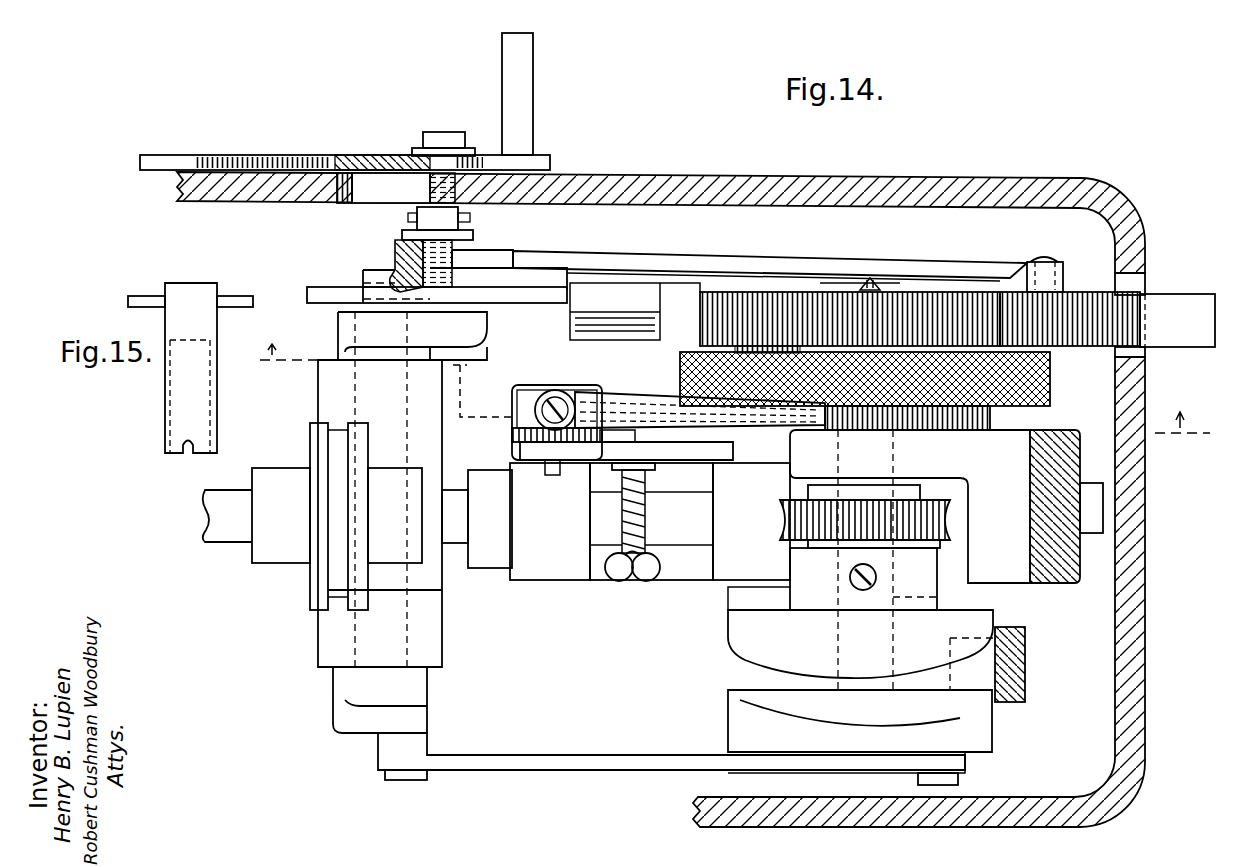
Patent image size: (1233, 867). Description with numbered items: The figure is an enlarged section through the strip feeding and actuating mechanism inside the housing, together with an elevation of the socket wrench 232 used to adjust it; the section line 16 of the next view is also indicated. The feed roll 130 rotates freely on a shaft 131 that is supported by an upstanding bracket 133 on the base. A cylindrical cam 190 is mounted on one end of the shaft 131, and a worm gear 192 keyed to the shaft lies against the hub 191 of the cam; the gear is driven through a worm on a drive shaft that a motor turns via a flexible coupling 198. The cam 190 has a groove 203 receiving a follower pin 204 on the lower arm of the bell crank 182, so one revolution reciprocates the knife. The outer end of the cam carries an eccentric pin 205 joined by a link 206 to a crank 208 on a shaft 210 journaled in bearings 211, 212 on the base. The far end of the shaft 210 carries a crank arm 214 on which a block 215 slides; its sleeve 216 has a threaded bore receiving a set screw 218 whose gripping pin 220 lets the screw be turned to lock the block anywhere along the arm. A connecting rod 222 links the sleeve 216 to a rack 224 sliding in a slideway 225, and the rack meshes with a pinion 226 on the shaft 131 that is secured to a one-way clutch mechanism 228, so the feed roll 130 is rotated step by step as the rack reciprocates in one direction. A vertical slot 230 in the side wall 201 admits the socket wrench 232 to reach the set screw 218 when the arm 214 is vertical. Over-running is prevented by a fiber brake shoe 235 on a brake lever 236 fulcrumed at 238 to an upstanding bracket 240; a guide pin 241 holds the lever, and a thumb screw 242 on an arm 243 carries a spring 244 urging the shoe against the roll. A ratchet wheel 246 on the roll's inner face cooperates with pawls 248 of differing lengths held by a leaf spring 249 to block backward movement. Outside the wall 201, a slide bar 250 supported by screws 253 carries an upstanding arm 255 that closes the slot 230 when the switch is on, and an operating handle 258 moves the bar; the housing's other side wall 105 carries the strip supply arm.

In FIG. 14, the section line 16 is at (732, 406).
In FIG. 14, the side wall 105 is at (695, 806).
In FIG. 14, the feed roll 130 is at (1040, 370).
In FIG. 14, the shaft 131 is at (941, 596).
In FIG. 14, the upstanding bracket 133 is at (910, 560).
In FIG. 14, the bell crank 182 is at (1025, 655).
In FIG. 14, the cylindrical cam 190 is at (992, 722).
In FIG. 14, the hub 191 is at (915, 562).
In FIG. 14, the worm gear 192 is at (935, 500).
In FIG. 14, the flexible coupling 198 is at (312, 565).
In FIG. 14, the side wall 201 is at (562, 176).
In FIG. 14, the groove 203 is at (730, 688).
In FIG. 14, the follower pin 204 is at (995, 670).
In FIG. 14, the eccentric pin 205 is at (960, 779).
In FIG. 14, the link 206 is at (598, 755).
In FIG. 14, the crank 208 is at (420, 718).
In FIG. 14, the shaft 210 is at (408, 635).
In FIG. 14, the bearing 211 is at (325, 635).
In FIG. 14, the bearing 212 is at (333, 408).
In FIG. 14, the crank arm 214 is at (538, 300).
In FIG. 14, the block 215 is at (365, 272).
In FIG. 14, the sleeve 216 is at (398, 245).
In FIG. 14, the set screw 218 is at (455, 256).
In FIG. 14, the gripping pin 220 is at (470, 216).
In FIG. 14, the connecting rod 222 is at (628, 252).
In FIG. 14, the rack 224 is at (1177, 320).
In FIG. 14, the slideway 225 is at (625, 338).
In FIG. 14, the pinion 226 is at (878, 310).
In FIG. 14, the one-way clutch mechanism 228 is at (795, 342).
In FIG. 14, the slot 230 is at (343, 204).
In FIG. 15, the socket wrench 232 is at (178, 375).
In FIG. 14, the brake shoe 235 is at (728, 455).
In FIG. 14, the brake lever 236 is at (685, 470).
In FIG. 14, the fulcrum 238 is at (516, 445).
In FIG. 14, the upstanding bracket 240 is at (512, 405).
In FIG. 14, the guide pin 241 is at (550, 475).
In FIG. 14, the thumb screw 242 is at (630, 582).
In FIG. 14, the arm 243 is at (660, 402).
In FIG. 14, the spring 244 is at (645, 518).
In FIG. 14, the ratchet wheel 246 is at (912, 425).
In FIG. 14, the pawls 248 is at (772, 523).
In FIG. 14, the leaf spring 249 is at (580, 392).
In FIG. 14, the slide bar 250 is at (200, 158).
In FIG. 14, the screws 253 is at (440, 132).
In FIG. 14, the upstanding arm 255 is at (372, 142).
In FIG. 14, the operating handle 258 is at (533, 62).